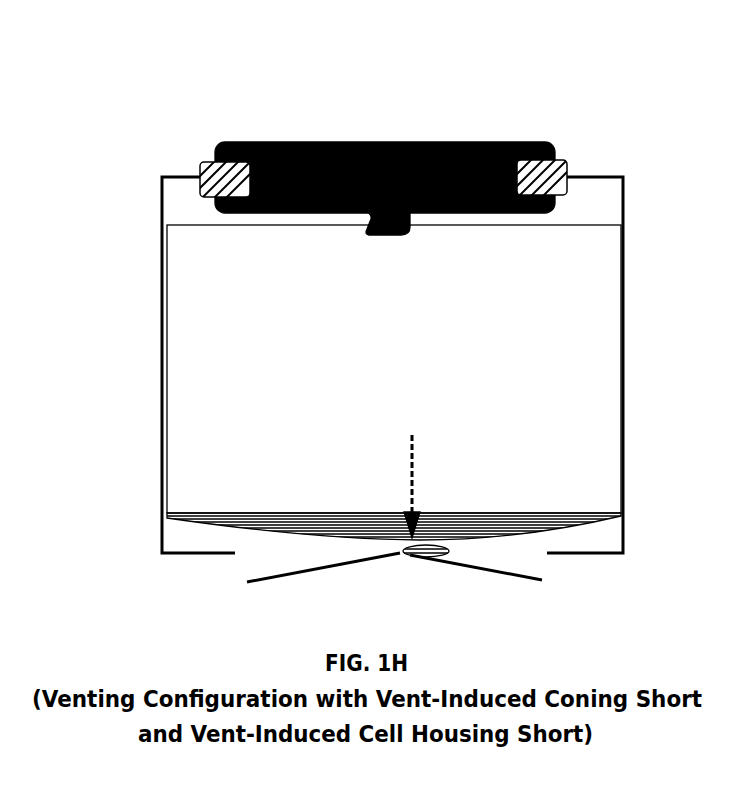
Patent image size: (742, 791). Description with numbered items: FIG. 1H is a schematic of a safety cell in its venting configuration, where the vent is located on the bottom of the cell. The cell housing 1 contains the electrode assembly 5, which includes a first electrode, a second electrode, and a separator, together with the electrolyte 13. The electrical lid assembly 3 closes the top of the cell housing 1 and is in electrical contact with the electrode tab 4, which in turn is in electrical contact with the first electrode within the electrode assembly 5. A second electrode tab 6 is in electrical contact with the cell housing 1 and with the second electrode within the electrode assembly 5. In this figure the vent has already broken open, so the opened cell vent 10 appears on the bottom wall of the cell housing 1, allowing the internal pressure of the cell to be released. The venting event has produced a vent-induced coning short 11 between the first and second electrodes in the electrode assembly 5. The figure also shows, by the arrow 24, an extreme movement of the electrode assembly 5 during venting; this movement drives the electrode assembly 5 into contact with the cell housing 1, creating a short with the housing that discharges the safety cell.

The cell housing 1 is at (162, 210).
The electrical lid assembly 3 is at (245, 140).
The electrode tab in electrical contact with lid assembly 4 is at (375, 203).
The electrode assembly 5 is at (180, 308).
The electrode tab in electrical contact with cell housing 6 is at (412, 555).
The cell vent (after cell vent) 10 is at (243, 562).
The coning short in venting configuration 11 is at (370, 535).
The electrolyte 13 is at (262, 403).
The extreme electrode assembly movement during venting configuration 24 is at (453, 447).